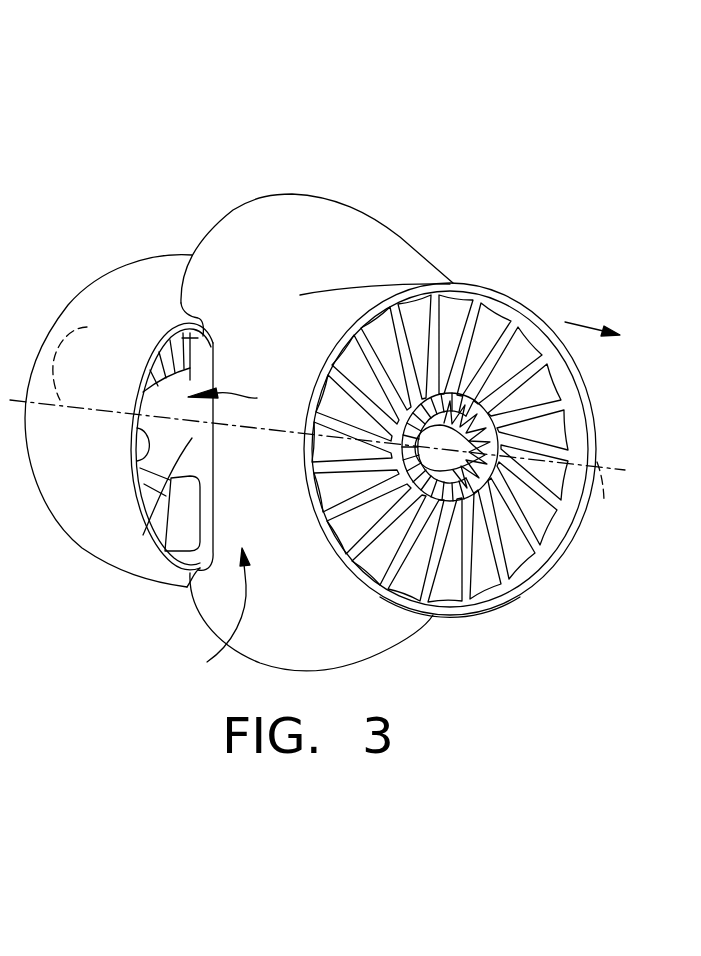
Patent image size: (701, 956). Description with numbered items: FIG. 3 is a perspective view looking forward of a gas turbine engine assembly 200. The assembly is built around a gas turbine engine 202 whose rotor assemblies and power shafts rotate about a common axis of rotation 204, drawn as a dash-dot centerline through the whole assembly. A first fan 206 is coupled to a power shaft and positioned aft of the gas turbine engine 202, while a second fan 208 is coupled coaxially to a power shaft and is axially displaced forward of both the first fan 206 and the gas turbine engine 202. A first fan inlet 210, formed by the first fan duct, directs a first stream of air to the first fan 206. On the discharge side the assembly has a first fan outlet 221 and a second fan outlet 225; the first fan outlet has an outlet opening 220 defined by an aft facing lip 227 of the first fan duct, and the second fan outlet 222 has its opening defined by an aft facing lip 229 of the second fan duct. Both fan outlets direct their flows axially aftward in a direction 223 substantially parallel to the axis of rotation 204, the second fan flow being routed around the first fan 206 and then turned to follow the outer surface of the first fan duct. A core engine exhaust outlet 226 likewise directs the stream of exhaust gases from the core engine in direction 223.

The gas turbine engine assembly 200 is at (400, 128).
The gas turbine engine 202 is at (143, 530).
The axis of rotation 204 is at (633, 518).
The first fan 206 is at (488, 315).
The second fan 208 is at (204, 332).
The first fan inlet 210 is at (267, 190).
The outlet opening 220 is at (600, 532).
The first fan outlet 221 is at (552, 594).
The second fan outlet 222 is at (247, 400).
The direction 223 is at (573, 322).
The second fan outlet 225 is at (293, 614).
The core engine exhaust outlet 226 is at (445, 495).
The aft facing lip 227 is at (463, 618).
The aft facing lip 229 is at (136, 457).